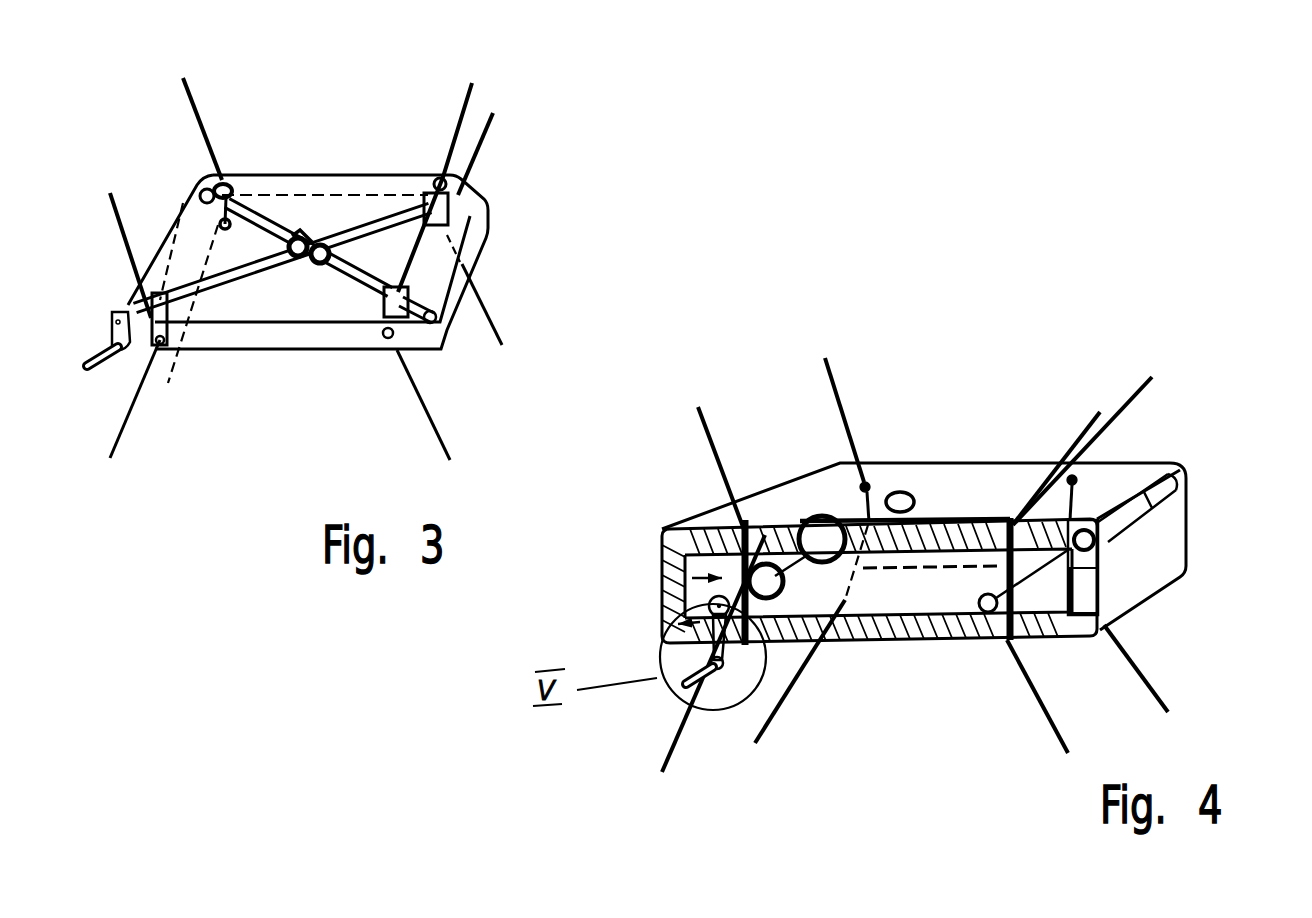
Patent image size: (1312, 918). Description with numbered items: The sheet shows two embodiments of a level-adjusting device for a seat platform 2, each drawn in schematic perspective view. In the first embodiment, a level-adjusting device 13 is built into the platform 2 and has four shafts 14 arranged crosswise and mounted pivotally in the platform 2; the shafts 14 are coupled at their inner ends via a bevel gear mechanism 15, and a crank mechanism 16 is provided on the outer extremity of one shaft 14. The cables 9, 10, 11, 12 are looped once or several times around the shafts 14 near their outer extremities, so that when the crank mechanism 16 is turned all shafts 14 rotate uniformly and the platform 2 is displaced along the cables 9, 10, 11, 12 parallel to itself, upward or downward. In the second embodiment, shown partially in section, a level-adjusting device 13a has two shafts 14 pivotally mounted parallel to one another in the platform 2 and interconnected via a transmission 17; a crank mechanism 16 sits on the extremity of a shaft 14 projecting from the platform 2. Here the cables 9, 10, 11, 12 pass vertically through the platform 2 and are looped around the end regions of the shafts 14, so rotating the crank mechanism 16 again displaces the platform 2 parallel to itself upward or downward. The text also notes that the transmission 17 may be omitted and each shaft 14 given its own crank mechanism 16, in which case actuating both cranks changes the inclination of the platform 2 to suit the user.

In FIG. 3, the platform 2 is at (490, 230).
In FIG. 4, the platform 2 is at (966, 462).
In FIG. 3, the cable 9 is at (124, 214).
In FIG. 4, the cable 9 is at (720, 446).
In FIG. 3, the cable 10 is at (192, 100).
In FIG. 4, the cable 10 is at (845, 388).
In FIG. 3, the cable 11 is at (470, 94).
In FIG. 4, the cable 11 is at (1147, 400).
In FIG. 3, the cable 12 is at (489, 140).
In FIG. 4, the cable 12 is at (1068, 452).
In FIG. 3, the level-adjusting device 13 is at (251, 290).
In FIG. 4, the level-adjusting device 13a is at (910, 585).
In FIG. 3, the shaft 14 is at (378, 227).
In FIG. 4, the shaft 14 is at (815, 562).
In FIG. 3, the bevel gear mechanism 15 is at (306, 288).
In FIG. 3, the crank mechanism 16 is at (108, 316).
In FIG. 4, the crank mechanism 16 is at (698, 661).
In FIG. 4, the transmission 17 is at (924, 530).